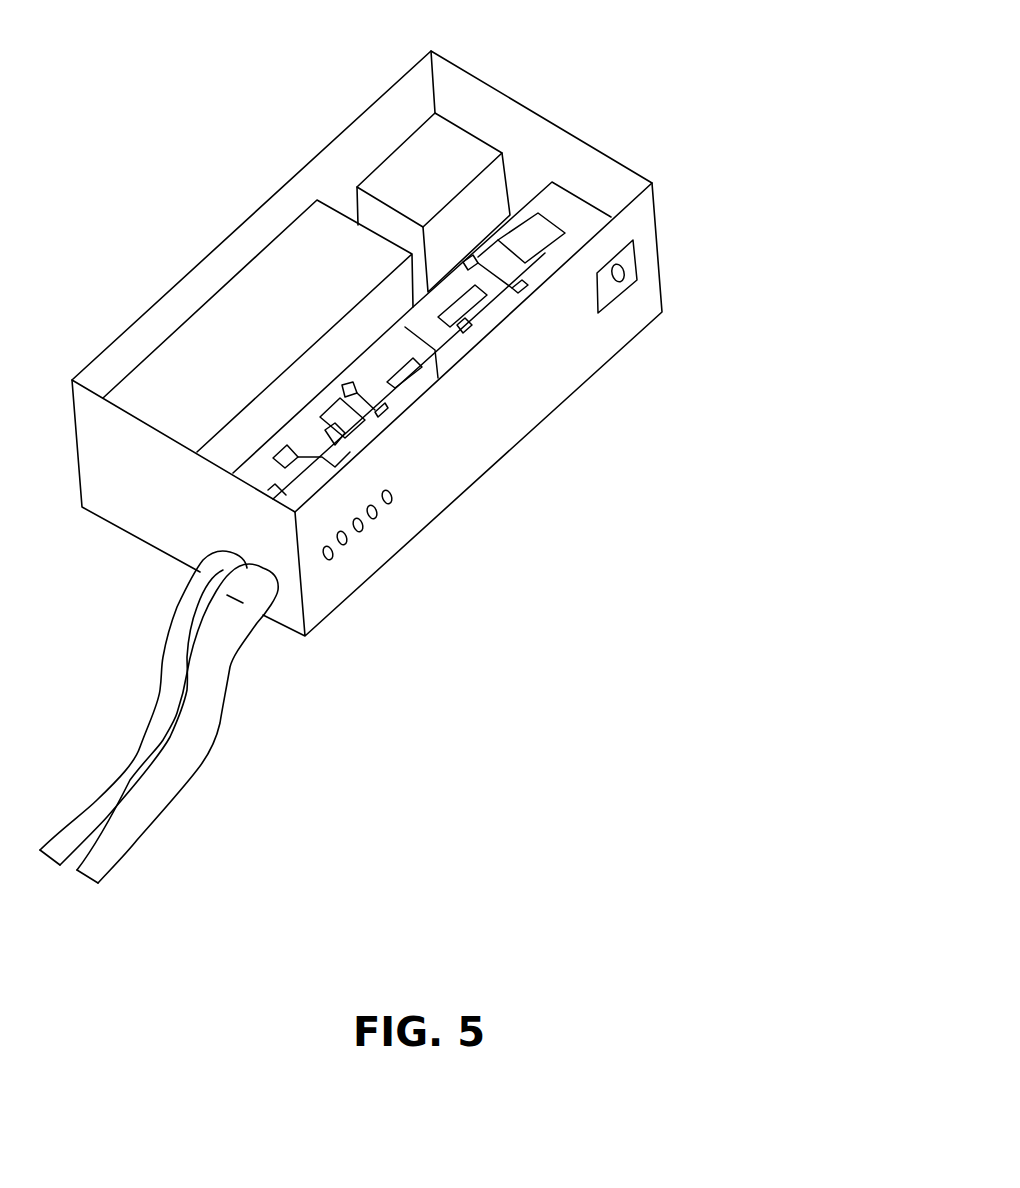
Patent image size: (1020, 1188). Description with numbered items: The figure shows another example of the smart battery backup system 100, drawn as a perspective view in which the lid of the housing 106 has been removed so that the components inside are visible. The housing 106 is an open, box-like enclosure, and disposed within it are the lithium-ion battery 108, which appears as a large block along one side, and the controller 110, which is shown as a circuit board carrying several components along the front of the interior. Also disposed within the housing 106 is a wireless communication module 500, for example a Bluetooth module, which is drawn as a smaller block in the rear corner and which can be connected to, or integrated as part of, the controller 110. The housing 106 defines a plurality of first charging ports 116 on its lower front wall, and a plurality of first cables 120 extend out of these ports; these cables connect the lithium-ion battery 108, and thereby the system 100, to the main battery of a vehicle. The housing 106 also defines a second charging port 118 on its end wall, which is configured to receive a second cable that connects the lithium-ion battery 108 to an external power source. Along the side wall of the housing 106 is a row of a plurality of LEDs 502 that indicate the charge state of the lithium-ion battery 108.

The smart battery backup system 100 is at (768, 93).
The housing 106 is at (530, 404).
The lithium-ion battery 108 is at (253, 300).
The controller 110 is at (575, 192).
The plurality of first charging ports 116 is at (200, 562).
The second charging port 118 is at (624, 274).
The plurality of first cables 120 is at (170, 723).
The wireless communication module 500 is at (443, 148).
The plurality of LEDs 502 is at (360, 533).